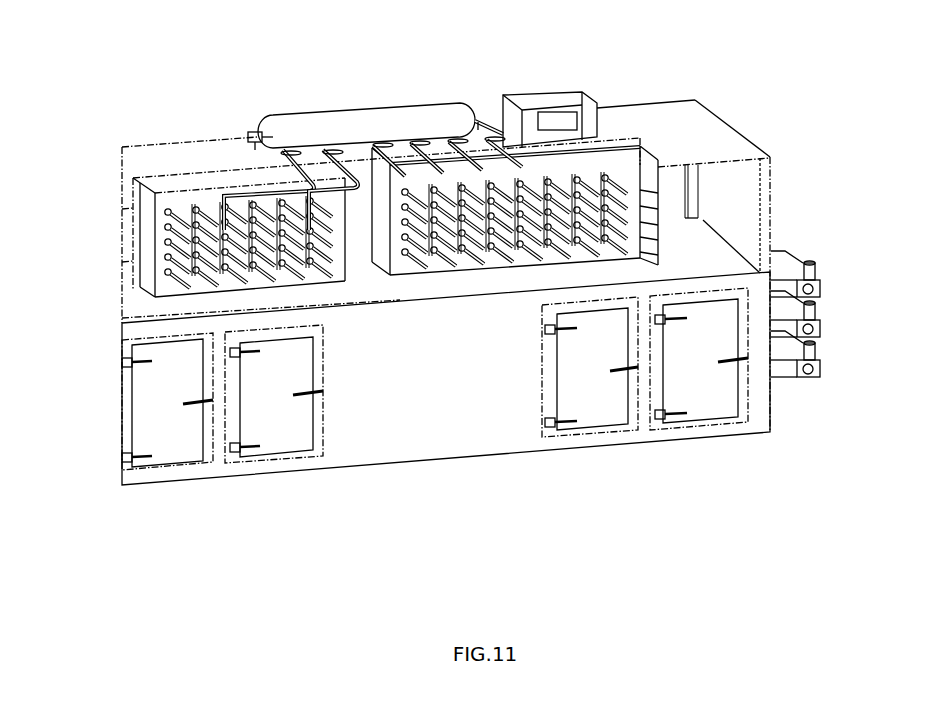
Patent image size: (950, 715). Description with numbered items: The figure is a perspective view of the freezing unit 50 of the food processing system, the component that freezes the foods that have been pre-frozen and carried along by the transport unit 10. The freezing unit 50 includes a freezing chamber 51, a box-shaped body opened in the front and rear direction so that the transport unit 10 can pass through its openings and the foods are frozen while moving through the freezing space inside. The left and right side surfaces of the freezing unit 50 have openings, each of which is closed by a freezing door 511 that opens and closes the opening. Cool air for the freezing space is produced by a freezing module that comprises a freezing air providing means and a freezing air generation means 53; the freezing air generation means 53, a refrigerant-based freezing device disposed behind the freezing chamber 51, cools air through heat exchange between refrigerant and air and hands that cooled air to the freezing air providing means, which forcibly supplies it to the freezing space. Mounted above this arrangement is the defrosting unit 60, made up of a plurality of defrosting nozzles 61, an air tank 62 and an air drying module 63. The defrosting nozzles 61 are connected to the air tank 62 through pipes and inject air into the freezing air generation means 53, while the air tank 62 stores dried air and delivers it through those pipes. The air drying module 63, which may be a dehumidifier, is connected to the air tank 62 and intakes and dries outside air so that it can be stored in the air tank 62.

The transport unit 10 is at (836, 323).
The freezing unit 50 is at (646, 462).
The freezing chamber 51 is at (489, 432).
The freezing door 511 is at (593, 420).
The freezing air generation means 53 is at (128, 240).
The defrosting unit 60 is at (243, 128).
The defrosting nozzles 61 is at (166, 206).
The air tank 62 is at (350, 121).
The air drying module 63 is at (544, 100).